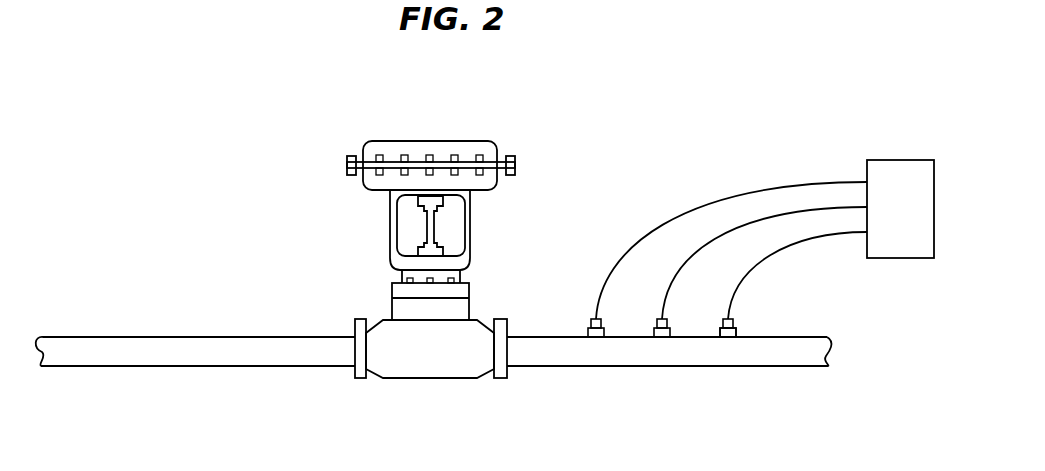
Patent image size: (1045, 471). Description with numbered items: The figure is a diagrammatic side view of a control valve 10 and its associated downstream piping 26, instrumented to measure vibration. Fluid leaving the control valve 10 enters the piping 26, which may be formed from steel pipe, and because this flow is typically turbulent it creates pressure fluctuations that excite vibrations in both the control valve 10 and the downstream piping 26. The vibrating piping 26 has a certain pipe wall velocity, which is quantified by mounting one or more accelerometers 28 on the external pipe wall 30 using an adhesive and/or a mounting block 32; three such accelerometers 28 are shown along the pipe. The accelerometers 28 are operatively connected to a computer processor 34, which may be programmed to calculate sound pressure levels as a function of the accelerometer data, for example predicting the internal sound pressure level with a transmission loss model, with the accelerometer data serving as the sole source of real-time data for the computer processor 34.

The control valve 10 is at (473, 305).
The piping 26 is at (636, 367).
The accelerometer 28 is at (733, 318).
The external pipe wall 30 is at (550, 337).
The mounting block 32 is at (737, 332).
The computer processor 34 is at (902, 160).